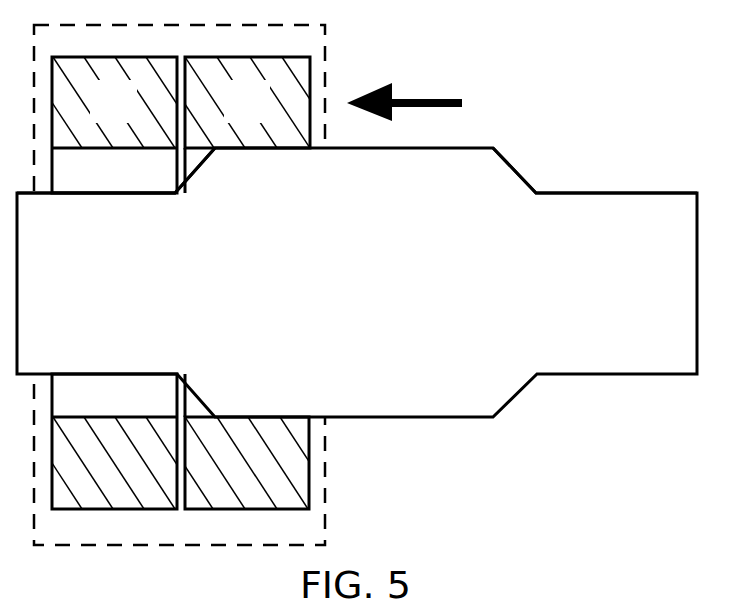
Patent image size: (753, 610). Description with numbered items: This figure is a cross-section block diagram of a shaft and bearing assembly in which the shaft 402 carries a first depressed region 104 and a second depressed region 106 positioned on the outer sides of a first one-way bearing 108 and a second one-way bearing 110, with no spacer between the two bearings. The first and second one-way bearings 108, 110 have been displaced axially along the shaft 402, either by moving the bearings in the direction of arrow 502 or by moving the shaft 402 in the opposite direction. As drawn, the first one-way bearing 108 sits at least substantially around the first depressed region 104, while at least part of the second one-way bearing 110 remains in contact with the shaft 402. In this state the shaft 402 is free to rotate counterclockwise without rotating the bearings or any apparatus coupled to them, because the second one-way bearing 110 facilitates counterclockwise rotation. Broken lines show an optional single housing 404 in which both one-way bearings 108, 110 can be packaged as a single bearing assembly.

The first depressed region 104 is at (124, 194).
The second depressed region 106 is at (578, 194).
The first one-way bearing 108 is at (135, 114).
The second one-way bearing 110 is at (268, 114).
The shaft 402 is at (395, 292).
The single housing 404 is at (326, 518).
The arrow 502 is at (423, 99).